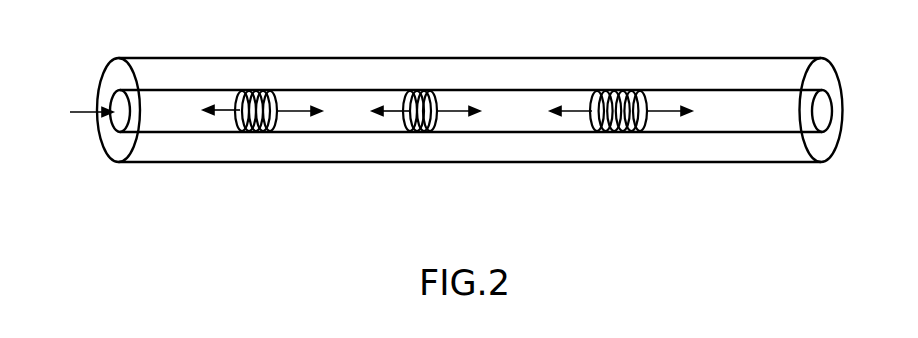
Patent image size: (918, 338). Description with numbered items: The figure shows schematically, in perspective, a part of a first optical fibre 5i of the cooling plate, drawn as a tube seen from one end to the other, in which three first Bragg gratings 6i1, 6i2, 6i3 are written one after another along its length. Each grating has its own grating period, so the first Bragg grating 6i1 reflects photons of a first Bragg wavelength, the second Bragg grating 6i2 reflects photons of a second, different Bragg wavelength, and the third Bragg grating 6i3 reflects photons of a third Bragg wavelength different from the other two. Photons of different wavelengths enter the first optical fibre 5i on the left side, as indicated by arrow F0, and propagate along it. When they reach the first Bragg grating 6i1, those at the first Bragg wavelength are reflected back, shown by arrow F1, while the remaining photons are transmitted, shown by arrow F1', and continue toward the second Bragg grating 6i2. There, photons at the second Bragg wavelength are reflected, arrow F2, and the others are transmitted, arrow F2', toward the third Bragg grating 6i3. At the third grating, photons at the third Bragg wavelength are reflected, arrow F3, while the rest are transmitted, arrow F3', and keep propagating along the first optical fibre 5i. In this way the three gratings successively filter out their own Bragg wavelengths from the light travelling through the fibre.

The first optical fibre 5i is at (724, 57).
The first Bragg grating 6i1 is at (254, 90).
The second Bragg grating 6i2 is at (420, 90).
The third Bragg grating 6i3 is at (617, 90).
The arrow F0 is at (88, 112).
The arrow F1 is at (201, 60).
The arrow F1' is at (278, 166).
The arrow F2 is at (375, 61).
The arrow F2' is at (436, 166).
The arrow F3 is at (555, 61).
The arrow F3' is at (648, 166).